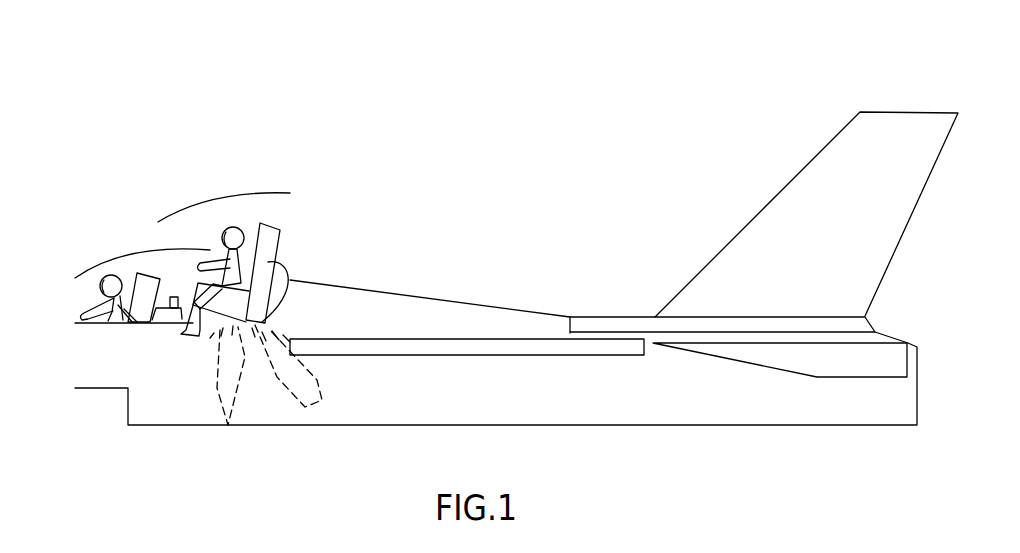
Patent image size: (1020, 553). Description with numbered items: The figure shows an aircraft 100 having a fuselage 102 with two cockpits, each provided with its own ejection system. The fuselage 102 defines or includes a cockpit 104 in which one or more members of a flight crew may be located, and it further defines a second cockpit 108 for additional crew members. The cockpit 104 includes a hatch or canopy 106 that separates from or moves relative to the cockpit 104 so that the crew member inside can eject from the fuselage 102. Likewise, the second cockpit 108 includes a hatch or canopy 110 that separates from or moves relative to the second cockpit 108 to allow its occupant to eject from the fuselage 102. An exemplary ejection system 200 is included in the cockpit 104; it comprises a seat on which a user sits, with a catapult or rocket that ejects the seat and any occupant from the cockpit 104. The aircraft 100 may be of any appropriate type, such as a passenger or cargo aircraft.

The aircraft 100 is at (636, 141).
The fuselage 102 is at (591, 310).
The cockpit 104 is at (96, 243).
The canopy 106 is at (157, 250).
The second cockpit 108 is at (283, 231).
The canopy 110 is at (190, 202).
The ejection system 200 is at (254, 250).